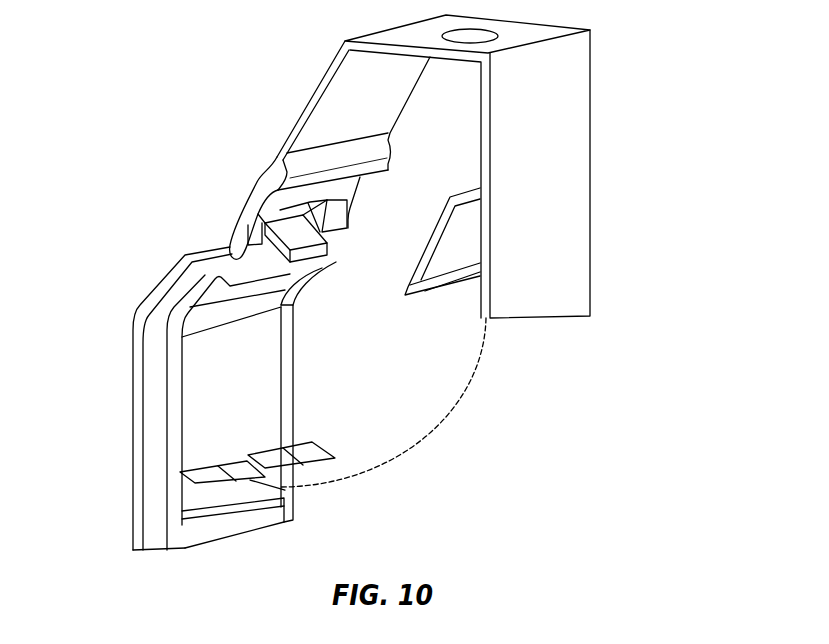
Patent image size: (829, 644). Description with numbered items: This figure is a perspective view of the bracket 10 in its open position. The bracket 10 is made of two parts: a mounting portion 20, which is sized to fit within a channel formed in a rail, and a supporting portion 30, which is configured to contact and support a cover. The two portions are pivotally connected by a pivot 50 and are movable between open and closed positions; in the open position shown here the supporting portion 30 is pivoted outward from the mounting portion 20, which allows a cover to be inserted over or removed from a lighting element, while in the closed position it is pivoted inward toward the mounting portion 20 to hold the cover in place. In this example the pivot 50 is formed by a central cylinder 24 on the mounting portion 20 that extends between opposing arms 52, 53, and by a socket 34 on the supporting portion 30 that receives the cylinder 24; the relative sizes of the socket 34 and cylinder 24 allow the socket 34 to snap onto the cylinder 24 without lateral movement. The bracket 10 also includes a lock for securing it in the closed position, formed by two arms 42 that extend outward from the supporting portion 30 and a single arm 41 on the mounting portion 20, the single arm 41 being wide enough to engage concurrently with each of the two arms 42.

The bracket 10 is at (148, 160).
The mounting portion 20 is at (550, 98).
The central cylinder 24 is at (272, 212).
The supporting portion 30 is at (158, 428).
The socket 34 is at (284, 244).
The single arm 41 is at (405, 297).
The two arms 42 is at (280, 487).
The pivot 50 is at (180, 238).
The opposing arm 52 is at (253, 243).
The opposing arm 53 is at (350, 224).